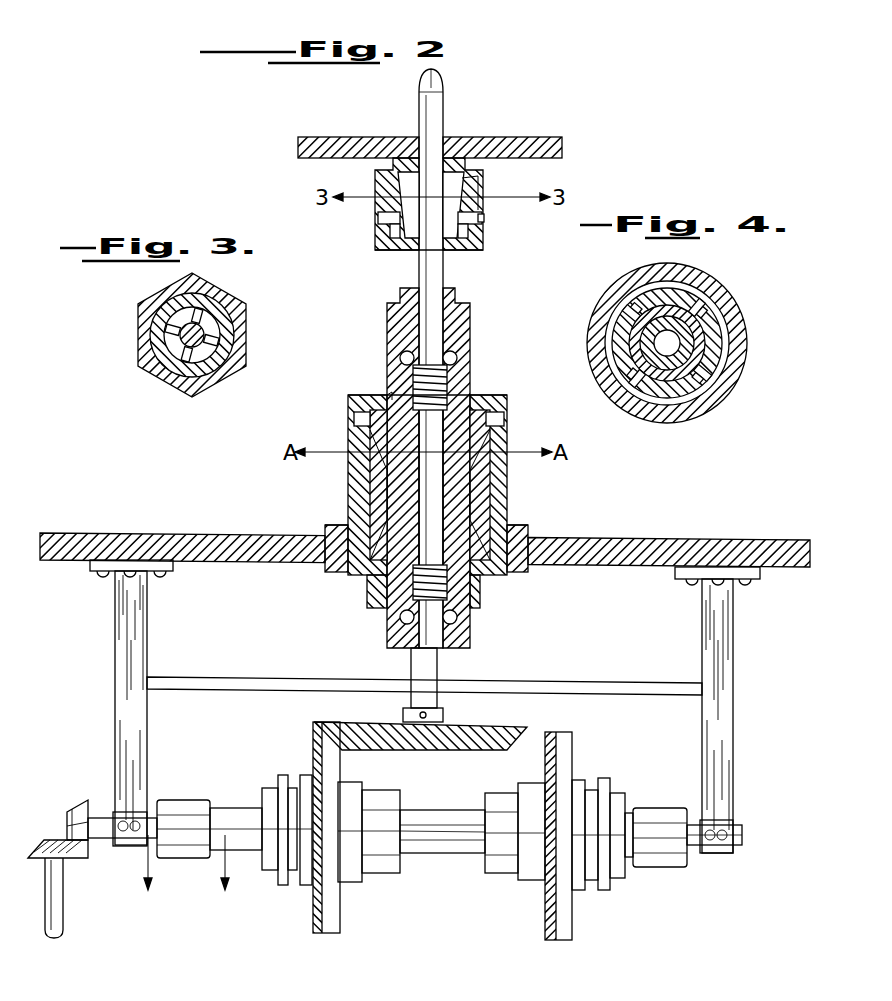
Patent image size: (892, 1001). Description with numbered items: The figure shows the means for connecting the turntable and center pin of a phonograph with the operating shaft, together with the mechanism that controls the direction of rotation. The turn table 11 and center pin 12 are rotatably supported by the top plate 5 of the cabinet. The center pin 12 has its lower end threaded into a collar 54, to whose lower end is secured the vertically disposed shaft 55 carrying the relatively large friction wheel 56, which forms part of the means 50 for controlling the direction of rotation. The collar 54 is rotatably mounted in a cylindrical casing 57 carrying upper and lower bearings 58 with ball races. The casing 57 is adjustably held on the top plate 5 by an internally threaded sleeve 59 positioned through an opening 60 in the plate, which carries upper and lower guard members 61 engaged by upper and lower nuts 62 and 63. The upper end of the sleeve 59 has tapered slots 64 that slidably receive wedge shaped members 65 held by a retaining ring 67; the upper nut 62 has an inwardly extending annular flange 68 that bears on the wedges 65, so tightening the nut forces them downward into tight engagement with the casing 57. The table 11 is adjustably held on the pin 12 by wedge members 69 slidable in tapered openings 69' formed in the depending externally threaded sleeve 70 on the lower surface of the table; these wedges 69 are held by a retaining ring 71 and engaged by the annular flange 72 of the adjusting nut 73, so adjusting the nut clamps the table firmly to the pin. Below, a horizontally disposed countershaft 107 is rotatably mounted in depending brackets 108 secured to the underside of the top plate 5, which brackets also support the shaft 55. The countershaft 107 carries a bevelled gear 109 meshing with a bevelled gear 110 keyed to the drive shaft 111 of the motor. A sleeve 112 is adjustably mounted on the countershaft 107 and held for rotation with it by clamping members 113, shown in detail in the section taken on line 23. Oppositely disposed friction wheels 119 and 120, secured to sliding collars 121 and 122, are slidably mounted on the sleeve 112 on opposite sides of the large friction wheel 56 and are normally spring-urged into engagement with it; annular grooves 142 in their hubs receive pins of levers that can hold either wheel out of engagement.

In FIG. 2, the center pin 12 is at (432, 100).
In FIG. 2, the turn table 11 is at (530, 147).
In FIG. 2, the depending externally threaded sleeve 70 is at (380, 176).
In FIG. 3, the depending externally threaded sleeve 70 is at (160, 352).
In FIG. 2, the adjusting nut 73 is at (388, 207).
In FIG. 2, the wedge members 69 is at (504, 205).
In FIG. 3, the wedge members 69 is at (446, 500).
In FIG. 2, the tapered openings 69' is at (542, 181).
In FIG. 2, the retaining ring 71 is at (486, 222).
In FIG. 2, the inwardly extending annular flange 72 is at (405, 252).
In FIG. 2, the upper and lower bearings 58 is at (468, 322).
In FIG. 2, the cylindrical casing 57 is at (462, 380).
In FIG. 4, the cylindrical casing 57 is at (700, 335).
In FIG. 2, the collar 54 is at (470, 402).
In FIG. 4, the collar 54 is at (680, 345).
In FIG. 2, the inwardly extending annular flange 68 is at (390, 395).
In FIG. 3, the inwardly extending annular flange 68 is at (150, 335).
In FIG. 2, the upper nut 62 is at (355, 475).
In FIG. 4, the upper nut 62 is at (730, 305).
In FIG. 2, the internally threaded sleeve 59 is at (500, 500).
In FIG. 4, the internally threaded sleeve 59 is at (700, 370).
In FIG. 2, the tapered notches or slots 64 is at (505, 450).
In FIG. 4, the tapered notches or slots 64 is at (700, 395).
In FIG. 2, the wedge shaped members 65 is at (355, 440).
In FIG. 4, the wedge shaped members 65 is at (665, 395).
In FIG. 2, the retaining ring 67 is at (508, 415).
In FIG. 2, the upper and lower guard members 61 is at (514, 533).
In FIG. 2, the opening 60 is at (545, 545).
In FIG. 2, the lower nut 63 is at (362, 595).
In FIG. 2, the top plate 5 is at (665, 540).
In FIG. 2, the depending brackets 108 is at (130, 648).
In FIG. 2, the vertically disposed shaft 55 is at (432, 663).
In FIG. 2, the relatively large friction wheel 56 is at (500, 722).
In FIG. 2, the friction wheel 119 is at (335, 925).
In FIG. 2, the friction wheel 120 is at (572, 935).
In FIG. 2, the means for controlling the direction of rotation 50 is at (490, 840).
In FIG. 2, the sleeve 112 is at (425, 850).
In FIG. 2, the clamping members 113 is at (175, 815).
In FIG. 2, the annular grooves 142 is at (295, 880).
In FIG. 2, the sliding collar 121 is at (370, 812).
In FIG. 2, the sliding collar 122 is at (498, 795).
In FIG. 2, the countershaft 107 is at (700, 828).
In FIG. 2, the bevelled gear 109 is at (72, 812).
In FIG. 2, the bevelled gear 110 is at (80, 860).
In FIG. 2, the drive shaft 111 is at (62, 925).
In FIG. 2, the section line 23 is at (183, 876).